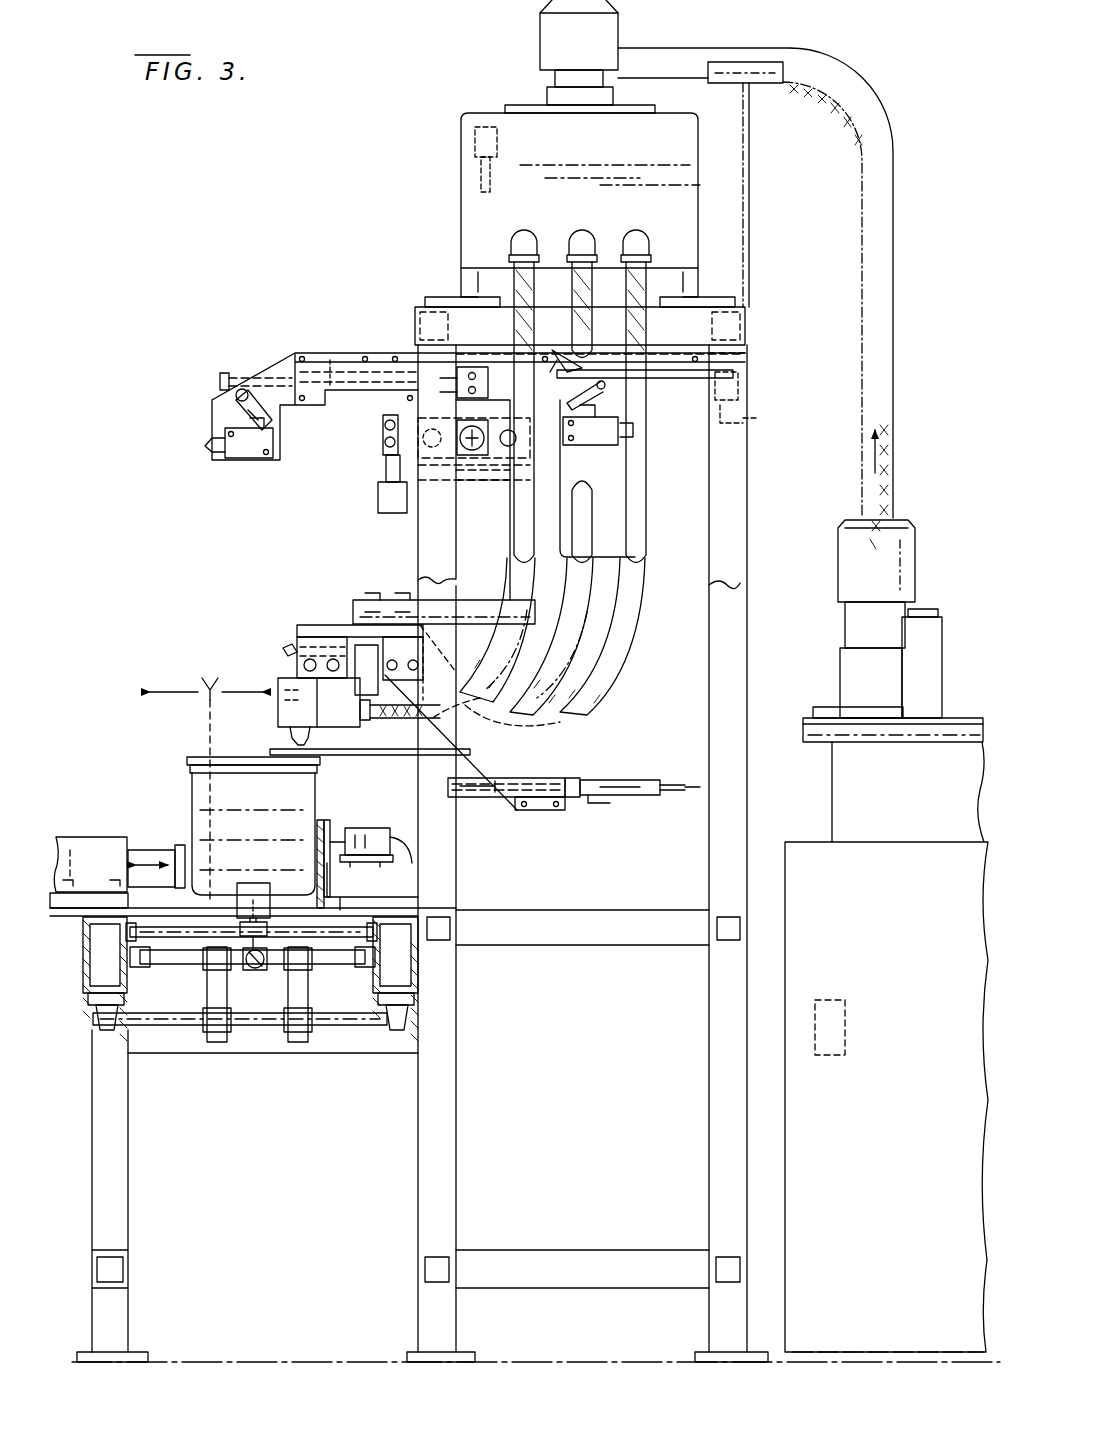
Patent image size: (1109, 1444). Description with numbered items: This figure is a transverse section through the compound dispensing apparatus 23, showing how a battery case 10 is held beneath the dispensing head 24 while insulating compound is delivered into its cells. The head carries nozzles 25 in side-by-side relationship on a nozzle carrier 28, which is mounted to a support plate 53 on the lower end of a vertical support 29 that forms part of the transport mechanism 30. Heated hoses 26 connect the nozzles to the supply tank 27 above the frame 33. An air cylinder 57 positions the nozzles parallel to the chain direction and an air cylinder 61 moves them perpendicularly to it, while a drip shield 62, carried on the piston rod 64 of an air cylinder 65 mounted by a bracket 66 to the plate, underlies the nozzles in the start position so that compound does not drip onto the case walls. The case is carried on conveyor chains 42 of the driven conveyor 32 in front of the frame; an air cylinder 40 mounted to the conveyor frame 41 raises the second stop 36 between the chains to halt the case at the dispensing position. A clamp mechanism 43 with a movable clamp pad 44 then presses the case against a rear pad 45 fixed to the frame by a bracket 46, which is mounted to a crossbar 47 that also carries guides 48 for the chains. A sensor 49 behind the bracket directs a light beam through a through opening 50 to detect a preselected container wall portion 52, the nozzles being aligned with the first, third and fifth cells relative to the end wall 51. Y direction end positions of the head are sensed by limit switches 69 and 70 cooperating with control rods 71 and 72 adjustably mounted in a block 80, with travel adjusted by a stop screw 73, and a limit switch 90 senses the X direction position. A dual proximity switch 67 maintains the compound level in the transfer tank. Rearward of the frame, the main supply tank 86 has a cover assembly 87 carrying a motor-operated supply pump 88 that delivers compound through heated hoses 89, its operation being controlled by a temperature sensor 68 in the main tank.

The battery case 10 is at (188, 768).
The compound dispensing apparatus 23 is at (455, 187).
The dispensing head 24 is at (278, 670).
The nozzles 25 is at (278, 720).
The hoses 26 is at (620, 640).
The supply tank 27 is at (695, 172).
The nozzle carrier 28 is at (335, 620).
The vertical support 29 is at (508, 565).
The transport mechanism 30 is at (355, 446).
The driven conveyor 32 is at (325, 1015).
The frame 33 is at (715, 1005).
The second stop 36 is at (252, 883).
The air cylinder 40 is at (255, 970).
The conveyor frame 41 is at (128, 993).
The conveyor chains 42 is at (215, 893).
The clamp mechanism 43 is at (110, 837).
The clamp pad 44 is at (185, 850).
The rear pad 45 is at (316, 868).
The bracket 46 is at (327, 900).
The crossbar 47 is at (430, 890).
The guides 48 is at (225, 940).
The sensor 49 is at (383, 805).
The through opening 50 is at (332, 843).
The end wall 51 is at (265, 792).
The container wall portion 52 is at (316, 843).
The support plate 53 is at (395, 600).
The air cylinder 57 is at (470, 458).
The air cylinder 61 is at (675, 398).
The drip shield 62 is at (352, 752).
The piston rod 64 is at (568, 767).
The air cylinder 65 is at (620, 780).
The bracket 66 is at (532, 760).
The dual proximity switch 67 is at (465, 147).
The temperature sensor 68 is at (848, 1030).
The limit switch 69 is at (607, 430).
The limit switch 70 is at (230, 455).
The control rod 71 is at (587, 360).
The control rod 72 is at (335, 385).
The stop screw 73 is at (215, 378).
The block 80 is at (470, 367).
The main supply tank 86 is at (828, 875).
The cover assembly 87 is at (848, 718).
The motor-operated supply pump 88 is at (910, 572).
The heated hoses 89 is at (895, 332).
The limit switch 90 is at (378, 500).